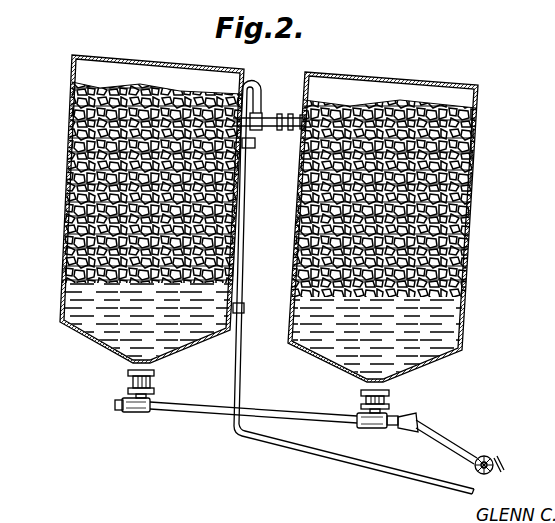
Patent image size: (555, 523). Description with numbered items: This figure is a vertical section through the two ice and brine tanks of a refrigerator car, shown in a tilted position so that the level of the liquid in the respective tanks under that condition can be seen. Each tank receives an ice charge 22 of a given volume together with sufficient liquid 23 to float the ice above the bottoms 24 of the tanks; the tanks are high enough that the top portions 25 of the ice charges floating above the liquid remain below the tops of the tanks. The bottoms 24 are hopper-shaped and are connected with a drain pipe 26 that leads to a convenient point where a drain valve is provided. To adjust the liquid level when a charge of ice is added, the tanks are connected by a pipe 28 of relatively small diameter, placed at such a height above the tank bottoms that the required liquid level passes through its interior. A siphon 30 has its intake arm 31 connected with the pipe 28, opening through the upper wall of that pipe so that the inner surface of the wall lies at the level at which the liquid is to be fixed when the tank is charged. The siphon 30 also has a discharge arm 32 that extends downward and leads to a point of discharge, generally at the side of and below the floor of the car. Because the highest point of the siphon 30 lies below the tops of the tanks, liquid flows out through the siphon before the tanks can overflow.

The ice charge 22 is at (72, 106).
The liquid 23 is at (58, 306).
The bottoms of the tanks 24 is at (110, 348).
The top portions of the ice charges 25 is at (136, 92).
The drain pipe 26 is at (201, 413).
The pipe 28 is at (273, 131).
The siphon 30 is at (262, 83).
The intake arm 31 is at (262, 107).
The discharge arm 32 is at (243, 265).